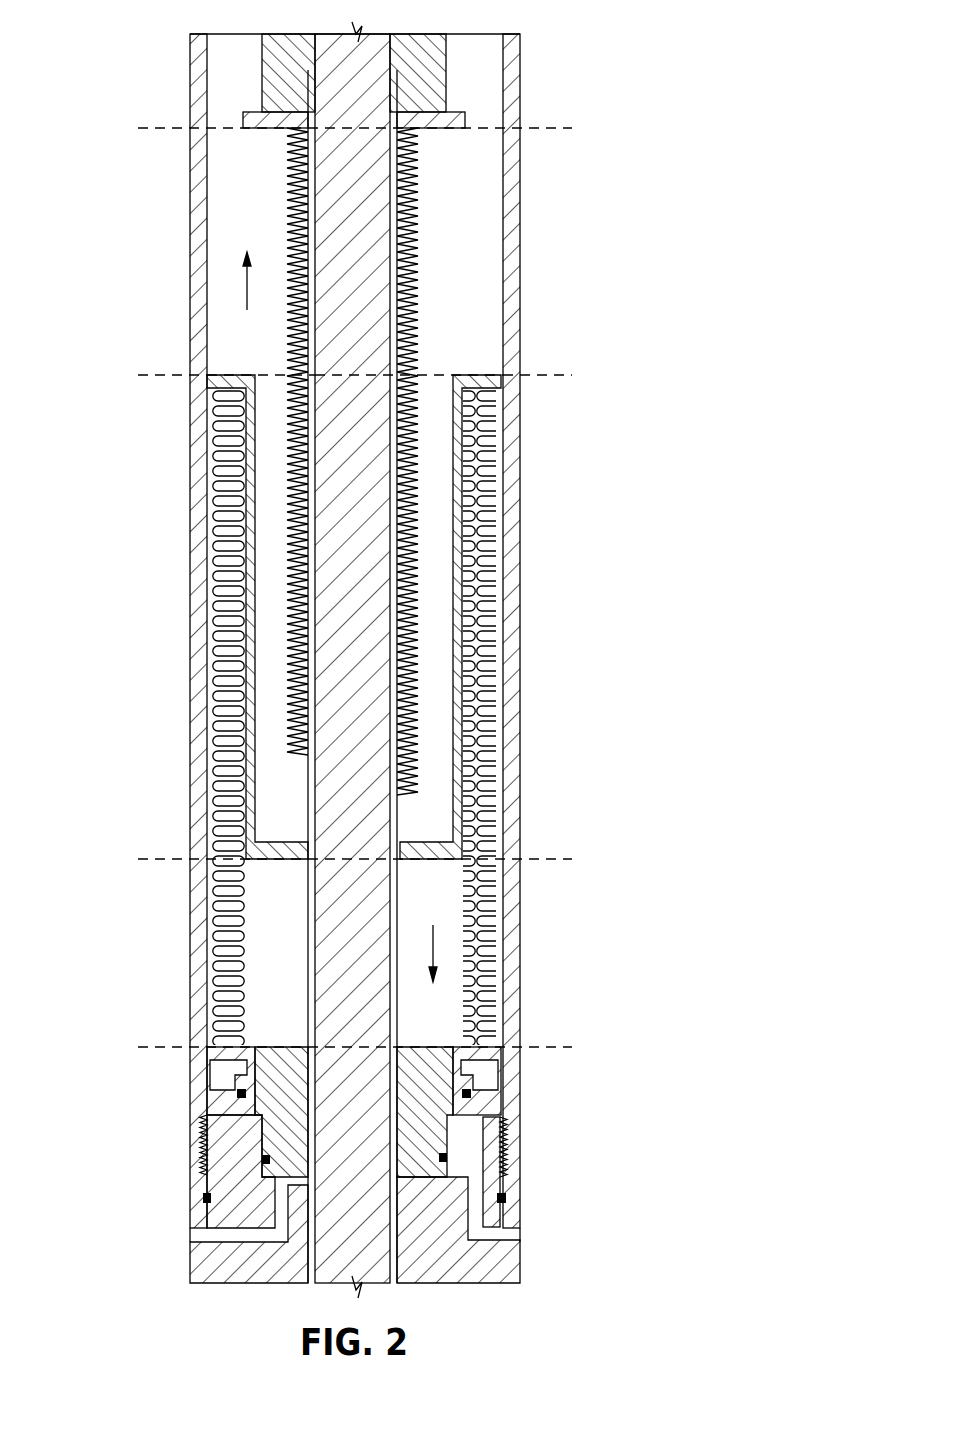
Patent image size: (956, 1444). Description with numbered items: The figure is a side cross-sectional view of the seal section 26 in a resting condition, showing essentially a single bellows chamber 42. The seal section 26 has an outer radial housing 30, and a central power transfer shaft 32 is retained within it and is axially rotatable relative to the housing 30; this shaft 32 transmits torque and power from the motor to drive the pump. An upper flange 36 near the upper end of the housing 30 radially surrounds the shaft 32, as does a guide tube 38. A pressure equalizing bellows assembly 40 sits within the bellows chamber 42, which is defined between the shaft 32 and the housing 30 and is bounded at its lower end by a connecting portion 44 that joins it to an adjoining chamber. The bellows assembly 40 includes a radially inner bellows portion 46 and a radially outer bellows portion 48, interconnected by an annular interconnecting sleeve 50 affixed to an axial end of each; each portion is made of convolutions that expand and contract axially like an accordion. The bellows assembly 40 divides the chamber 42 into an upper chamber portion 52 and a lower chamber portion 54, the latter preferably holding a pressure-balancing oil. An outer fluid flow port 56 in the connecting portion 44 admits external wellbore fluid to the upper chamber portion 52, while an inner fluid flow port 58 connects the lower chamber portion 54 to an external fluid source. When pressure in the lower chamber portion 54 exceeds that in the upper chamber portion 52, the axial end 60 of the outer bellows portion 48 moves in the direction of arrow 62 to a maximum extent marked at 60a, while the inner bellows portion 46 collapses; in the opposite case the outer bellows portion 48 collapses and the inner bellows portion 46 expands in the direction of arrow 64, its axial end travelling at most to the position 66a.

The seal section 26 is at (600, 208).
The outer radial housing 30 is at (520, 42).
The central power transfer shaft 32 is at (360, 212).
The upper flange 36 is at (466, 118).
The guide tube 38 is at (405, 262).
The pressure equalizing bellows assembly 40 is at (504, 676).
The bellows chamber 42 is at (473, 318).
The connecting portion 44 is at (225, 1165).
The radially inner bellows portion 46 is at (290, 752).
The radially outer bellows portion 48 is at (492, 718).
The annular interconnecting sleeve 50 is at (247, 632).
The upper chamber portion 52 is at (228, 185).
The lower chamber portion 54 is at (273, 938).
The outer fluid flow port 56 is at (515, 1242).
The inner fluid flow port 58 is at (207, 1240).
The axial end of the outer bellows portion 60 is at (215, 375).
The maximum extent of axial movement of axial end 60a is at (150, 128).
The arrow 62 is at (243, 288).
The arrow 64 is at (435, 943).
The maximum extent of axial movement of inner bellows axial end 66a is at (497, 1066).